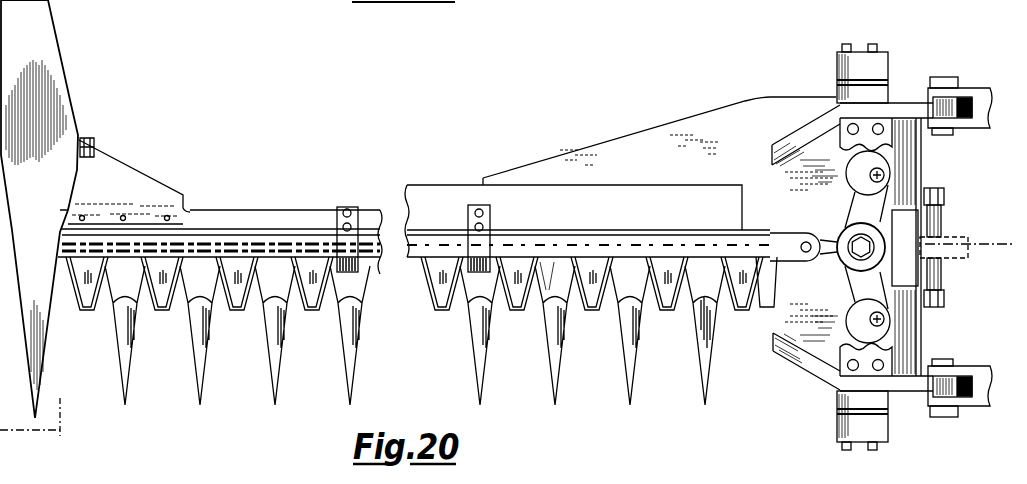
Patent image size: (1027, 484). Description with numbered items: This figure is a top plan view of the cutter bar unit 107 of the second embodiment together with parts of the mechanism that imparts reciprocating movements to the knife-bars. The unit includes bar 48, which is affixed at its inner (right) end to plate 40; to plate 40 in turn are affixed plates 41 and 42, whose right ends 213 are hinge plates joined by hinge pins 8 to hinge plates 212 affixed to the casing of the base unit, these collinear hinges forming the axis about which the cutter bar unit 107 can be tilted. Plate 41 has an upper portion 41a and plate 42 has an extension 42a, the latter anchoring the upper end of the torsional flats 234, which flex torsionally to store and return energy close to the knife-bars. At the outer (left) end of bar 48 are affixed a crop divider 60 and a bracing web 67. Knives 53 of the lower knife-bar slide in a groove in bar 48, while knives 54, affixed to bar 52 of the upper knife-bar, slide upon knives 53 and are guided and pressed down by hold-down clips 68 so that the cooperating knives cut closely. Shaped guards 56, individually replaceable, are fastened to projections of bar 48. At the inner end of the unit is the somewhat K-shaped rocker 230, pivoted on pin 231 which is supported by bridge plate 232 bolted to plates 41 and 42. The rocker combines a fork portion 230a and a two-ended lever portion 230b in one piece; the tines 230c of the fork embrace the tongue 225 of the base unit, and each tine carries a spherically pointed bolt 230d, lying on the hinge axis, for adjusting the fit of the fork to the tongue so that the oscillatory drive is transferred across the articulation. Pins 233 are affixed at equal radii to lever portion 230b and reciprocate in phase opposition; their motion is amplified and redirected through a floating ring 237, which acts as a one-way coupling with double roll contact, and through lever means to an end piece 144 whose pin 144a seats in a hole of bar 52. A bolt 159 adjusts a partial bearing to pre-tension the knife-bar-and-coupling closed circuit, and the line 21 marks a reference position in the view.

The hinge pins 8 is at (953, 77).
The ground line / reference plane 21 is at (12, 433).
The plate 40 is at (728, 113).
The plate 41 is at (787, 138).
The upper cylinder 41a is at (890, 70).
The plate 42 is at (822, 367).
The extension of plate 42 42a is at (838, 426).
The bar 48 is at (467, 193).
The bar 52 is at (772, 305).
The knives 53 is at (547, 283).
The knives 54 is at (593, 305).
The guards 56 is at (547, 380).
The crop divider 60 is at (40, 353).
The bracing web 67 is at (128, 160).
The hold-down clips 68 is at (340, 207).
The cutter bar unit 107 is at (425, 182).
The end piece 144 is at (822, 229).
The pin 144a is at (800, 240).
The bolt 159 is at (95, 140).
The hinge plates 212 is at (980, 95).
The hinge plates 213 is at (933, 107).
The tongue 225 is at (976, 245).
The rocker 230 is at (927, 315).
The fork portion of rocker 230a is at (925, 178).
The lever portion of rocker 230b is at (884, 175).
The tines 230c is at (948, 218).
The spherically pointed bolt 230d is at (880, 243).
The pin 231 is at (840, 270).
The bridge plate 232 is at (836, 150).
The pins 233 is at (892, 167).
The torsional flats 234 is at (917, 145).
The floating ring 237 is at (840, 183).